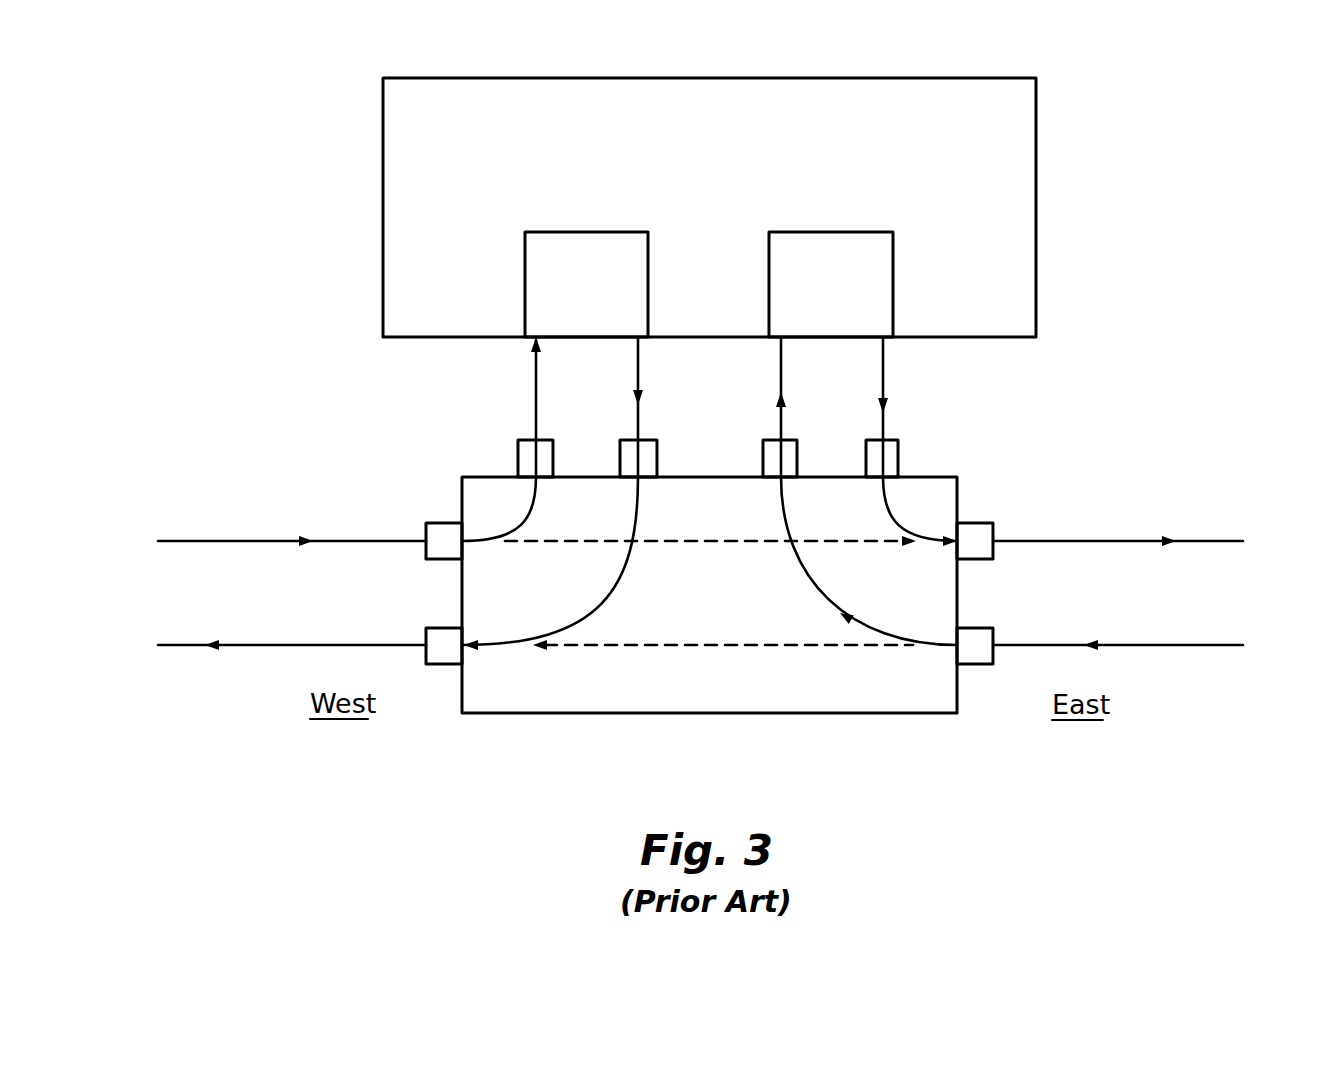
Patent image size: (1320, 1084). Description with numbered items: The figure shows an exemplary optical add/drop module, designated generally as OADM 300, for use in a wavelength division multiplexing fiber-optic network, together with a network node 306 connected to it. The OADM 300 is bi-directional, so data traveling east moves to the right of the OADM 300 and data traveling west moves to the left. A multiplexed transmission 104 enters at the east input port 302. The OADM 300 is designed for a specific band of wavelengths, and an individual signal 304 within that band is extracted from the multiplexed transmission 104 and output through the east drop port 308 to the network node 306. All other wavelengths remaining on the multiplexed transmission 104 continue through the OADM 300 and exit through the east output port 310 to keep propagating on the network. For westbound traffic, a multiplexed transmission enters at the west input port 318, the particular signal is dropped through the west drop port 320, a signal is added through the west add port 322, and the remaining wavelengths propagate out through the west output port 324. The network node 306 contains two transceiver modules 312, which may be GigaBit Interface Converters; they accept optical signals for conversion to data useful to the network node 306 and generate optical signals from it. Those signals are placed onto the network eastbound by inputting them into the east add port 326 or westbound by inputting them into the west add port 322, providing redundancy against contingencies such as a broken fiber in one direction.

The multiplexed transmission 104 is at (178, 537).
The OADM 300 is at (470, 760).
The east input port 302 is at (445, 523).
The individual signal 304 is at (535, 372).
The network node 306 is at (1027, 133).
The east drop port 308 is at (523, 452).
The east output port 310 is at (982, 523).
The transceiver modules 312 is at (832, 232).
The west input port 318 is at (982, 628).
The west drop port 320 is at (790, 448).
The west add port 322 is at (630, 453).
The west output port 324 is at (445, 628).
The east add port 326 is at (897, 455).